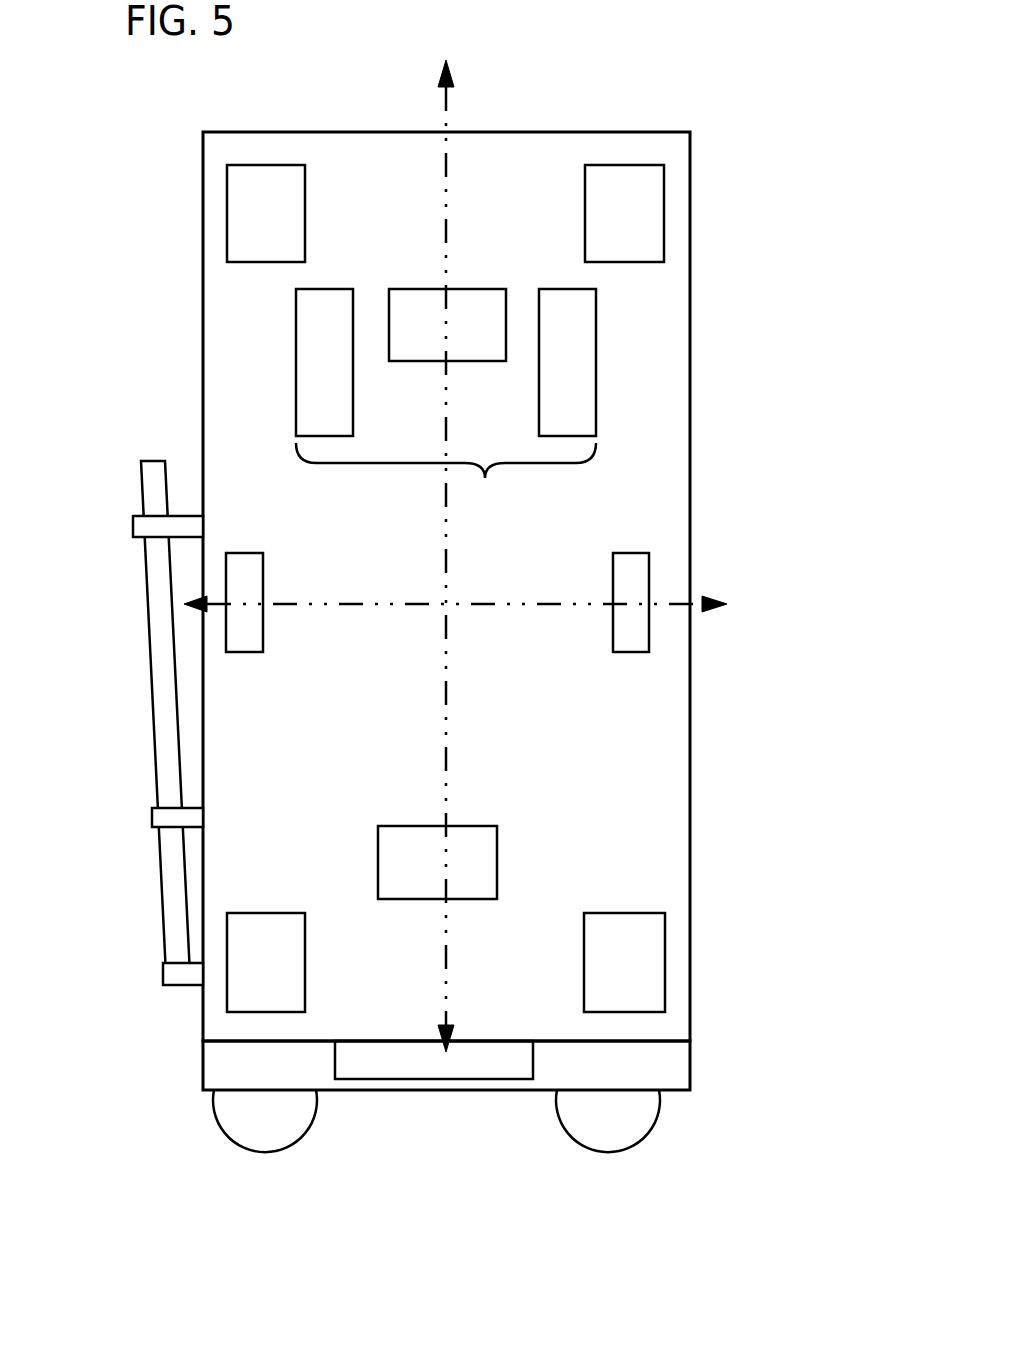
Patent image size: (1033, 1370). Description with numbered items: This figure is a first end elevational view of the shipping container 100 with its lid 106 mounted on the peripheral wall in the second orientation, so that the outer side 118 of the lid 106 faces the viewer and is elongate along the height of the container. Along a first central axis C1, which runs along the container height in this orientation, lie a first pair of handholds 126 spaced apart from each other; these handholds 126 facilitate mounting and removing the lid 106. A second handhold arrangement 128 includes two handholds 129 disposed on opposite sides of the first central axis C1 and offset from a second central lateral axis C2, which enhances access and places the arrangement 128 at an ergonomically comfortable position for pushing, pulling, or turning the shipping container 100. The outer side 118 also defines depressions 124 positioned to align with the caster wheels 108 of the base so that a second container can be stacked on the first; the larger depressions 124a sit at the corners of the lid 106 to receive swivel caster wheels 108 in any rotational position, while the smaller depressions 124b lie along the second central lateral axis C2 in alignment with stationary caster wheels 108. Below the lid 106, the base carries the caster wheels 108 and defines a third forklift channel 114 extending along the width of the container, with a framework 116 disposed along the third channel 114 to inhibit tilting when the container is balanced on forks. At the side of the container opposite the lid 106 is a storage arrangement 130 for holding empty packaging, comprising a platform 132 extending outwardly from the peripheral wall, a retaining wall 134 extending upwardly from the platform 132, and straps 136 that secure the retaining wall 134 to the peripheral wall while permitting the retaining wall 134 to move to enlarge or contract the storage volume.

The shipping container 100 is at (808, 159).
The lid 106 is at (653, 782).
The caster wheels 108 is at (242, 1117).
The third channel 114 is at (410, 1052).
The framework 116 is at (427, 1080).
The outer side 118 is at (393, 672).
The depressions 124 is at (535, 529).
The larger depressions 124a is at (607, 183).
The smaller depressions 124b is at (628, 604).
The first pair of handholds 126 is at (420, 305).
The second handhold arrangement 128 is at (446, 485).
The second pair of handholds 129 is at (342, 397).
The storage arrangement 130 is at (119, 706).
The platform 132 is at (182, 985).
The retaining wall 134 is at (147, 590).
The straps 136 is at (153, 830).
The first central axis C1 is at (447, 258).
The second central lateral axis C2 is at (353, 604).